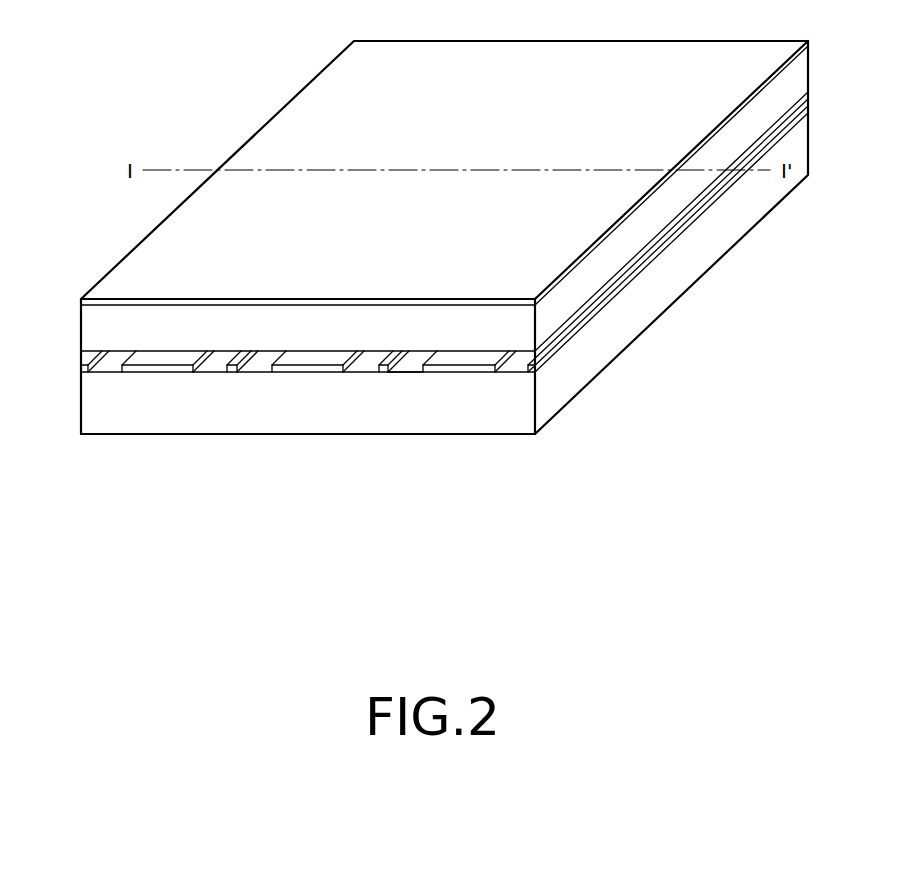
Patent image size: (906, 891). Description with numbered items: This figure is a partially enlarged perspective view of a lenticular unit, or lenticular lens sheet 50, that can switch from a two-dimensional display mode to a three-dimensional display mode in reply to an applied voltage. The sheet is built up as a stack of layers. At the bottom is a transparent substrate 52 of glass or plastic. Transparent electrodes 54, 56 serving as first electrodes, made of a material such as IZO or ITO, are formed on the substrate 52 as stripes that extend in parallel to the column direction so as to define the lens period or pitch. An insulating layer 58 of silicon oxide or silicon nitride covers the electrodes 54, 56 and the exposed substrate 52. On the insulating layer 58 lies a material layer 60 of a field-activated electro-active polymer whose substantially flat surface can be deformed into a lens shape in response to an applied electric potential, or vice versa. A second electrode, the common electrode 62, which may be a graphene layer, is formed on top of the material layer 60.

The lenticular lens sheet 50 is at (444, 226).
The transparent substrate 52 is at (153, 420).
The transparent electrode 54 is at (302, 367).
The transparent electrode 56 is at (382, 373).
The insulating layer 58 is at (412, 365).
The material layer 60 is at (90, 333).
The second electrode 62 is at (81, 302).